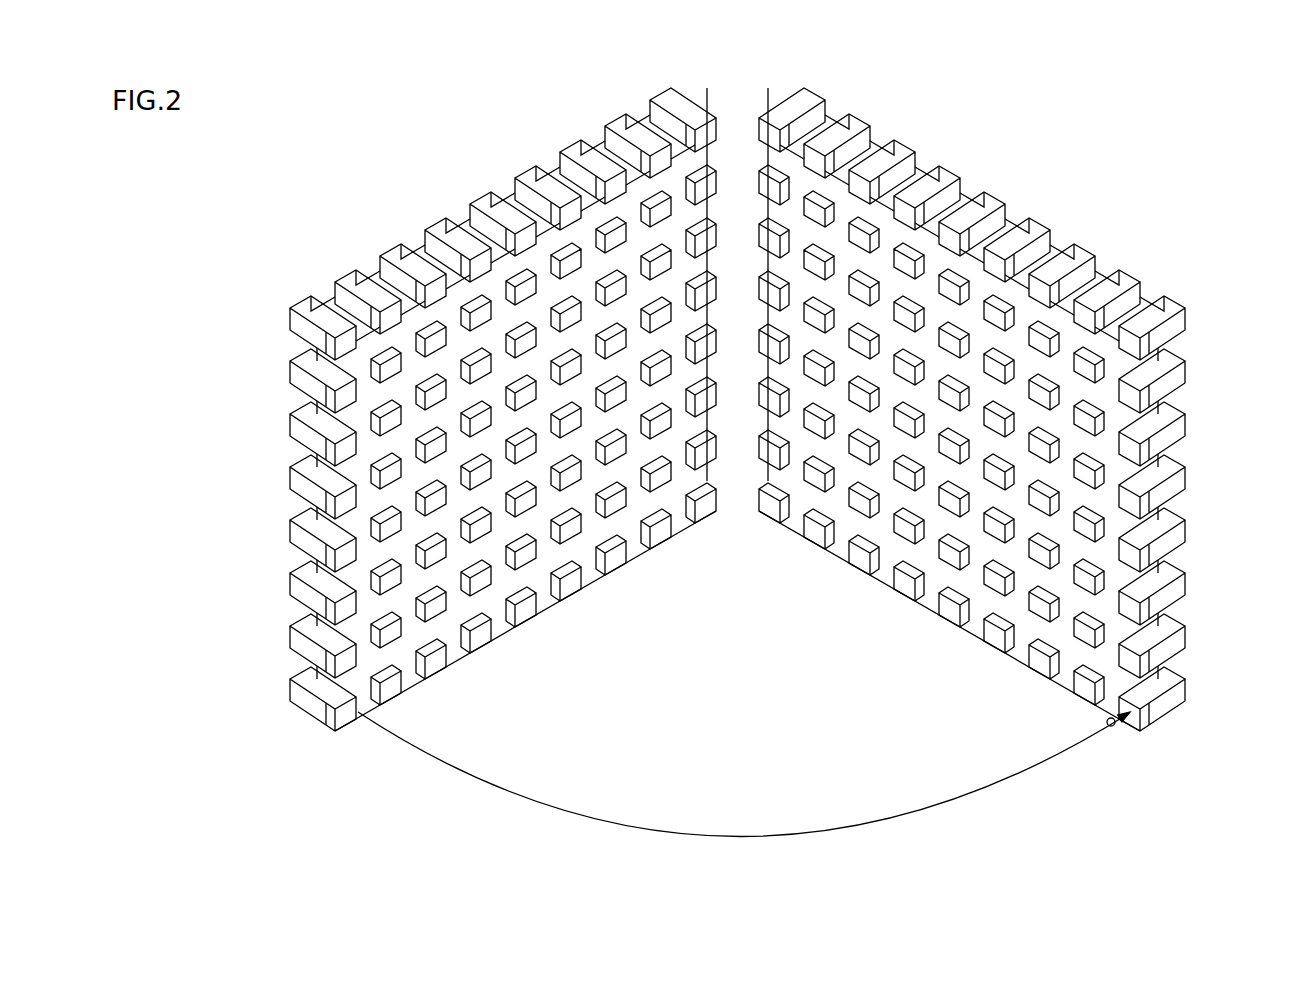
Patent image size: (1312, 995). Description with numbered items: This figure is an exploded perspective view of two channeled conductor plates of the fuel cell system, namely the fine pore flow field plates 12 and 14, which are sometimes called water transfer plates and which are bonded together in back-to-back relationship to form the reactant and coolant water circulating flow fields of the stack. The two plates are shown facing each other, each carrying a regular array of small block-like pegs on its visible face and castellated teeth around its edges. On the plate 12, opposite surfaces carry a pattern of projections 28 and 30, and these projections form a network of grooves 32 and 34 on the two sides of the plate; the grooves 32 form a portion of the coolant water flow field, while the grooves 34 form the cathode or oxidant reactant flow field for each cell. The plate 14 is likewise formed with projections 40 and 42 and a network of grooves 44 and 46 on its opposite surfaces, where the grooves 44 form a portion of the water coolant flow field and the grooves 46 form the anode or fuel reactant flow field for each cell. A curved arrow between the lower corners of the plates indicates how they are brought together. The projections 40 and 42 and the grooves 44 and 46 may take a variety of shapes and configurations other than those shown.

The flow field plate 12 is at (448, 163).
The flow field plate 14 is at (1029, 160).
The projections 28 is at (624, 516).
The projections 30 is at (432, 222).
The grooves 32 is at (627, 203).
The grooves 34 is at (299, 548).
The projections 40 is at (862, 516).
The projections 42 is at (1040, 222).
The grooves 44 is at (848, 205).
The grooves 46 is at (1176, 546).